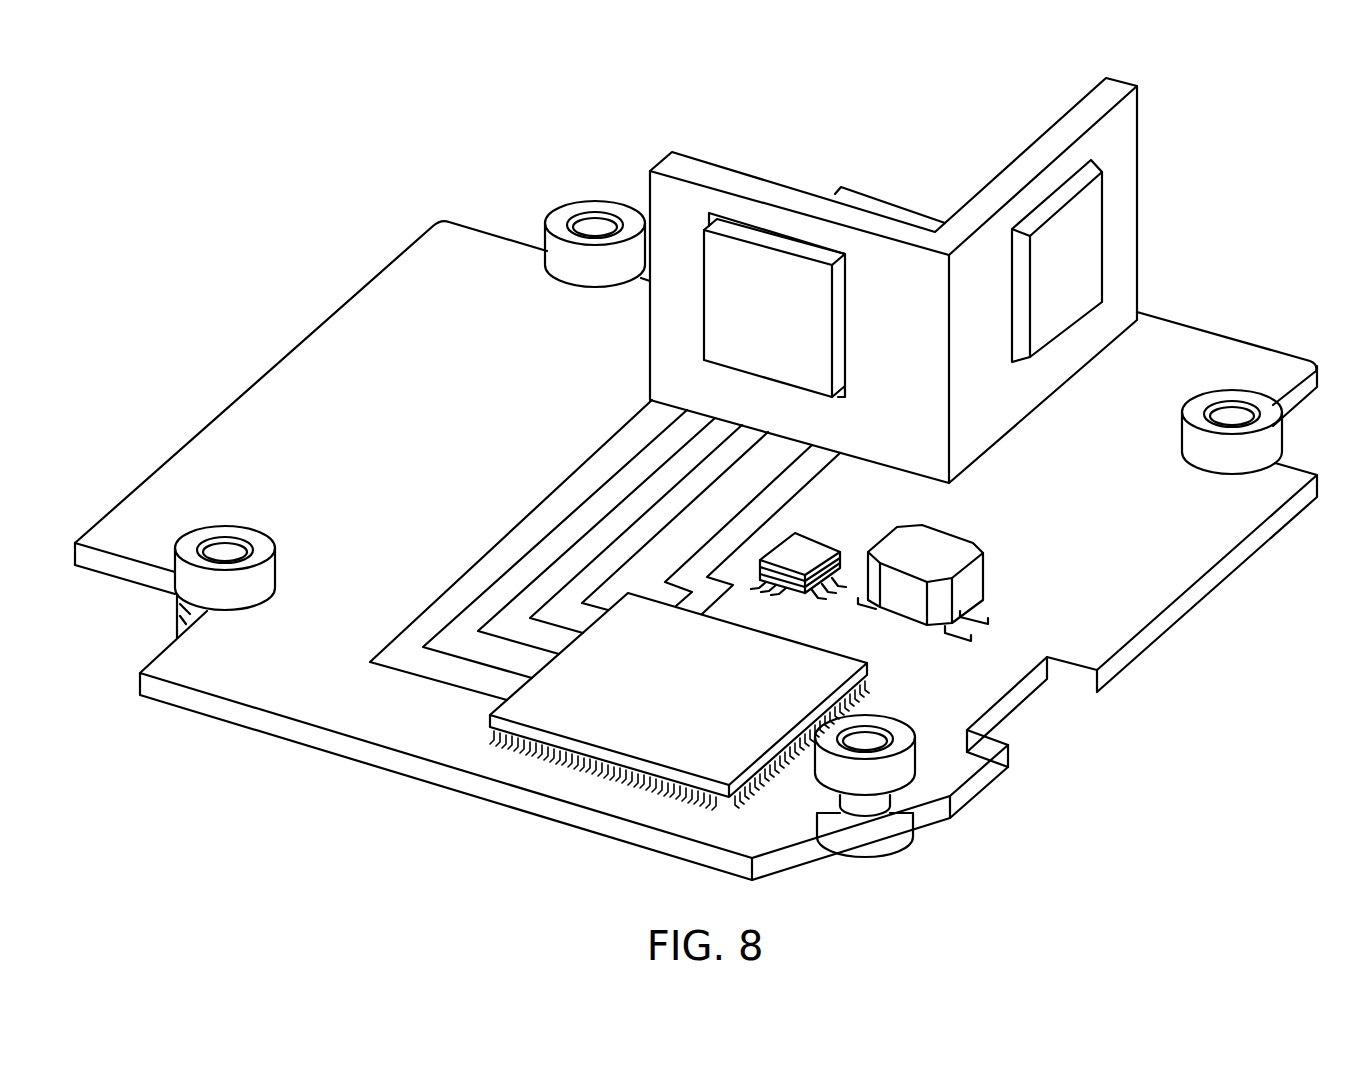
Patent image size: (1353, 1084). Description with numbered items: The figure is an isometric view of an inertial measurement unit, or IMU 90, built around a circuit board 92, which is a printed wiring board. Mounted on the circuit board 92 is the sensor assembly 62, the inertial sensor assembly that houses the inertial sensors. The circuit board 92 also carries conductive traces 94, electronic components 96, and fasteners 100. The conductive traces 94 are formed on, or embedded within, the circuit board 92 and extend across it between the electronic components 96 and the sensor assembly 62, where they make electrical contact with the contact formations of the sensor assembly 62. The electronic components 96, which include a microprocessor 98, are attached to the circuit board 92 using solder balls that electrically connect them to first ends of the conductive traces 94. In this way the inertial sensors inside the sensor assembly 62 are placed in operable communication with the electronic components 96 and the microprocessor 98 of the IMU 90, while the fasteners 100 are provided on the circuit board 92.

The sensor assembly 62 is at (968, 136).
The IMU 90 is at (329, 222).
The circuit board 92 is at (285, 362).
The conductive traces 94 is at (437, 602).
The electronic components 96 is at (978, 682).
The microprocessor 98 is at (698, 706).
The fasteners 100 is at (597, 204).